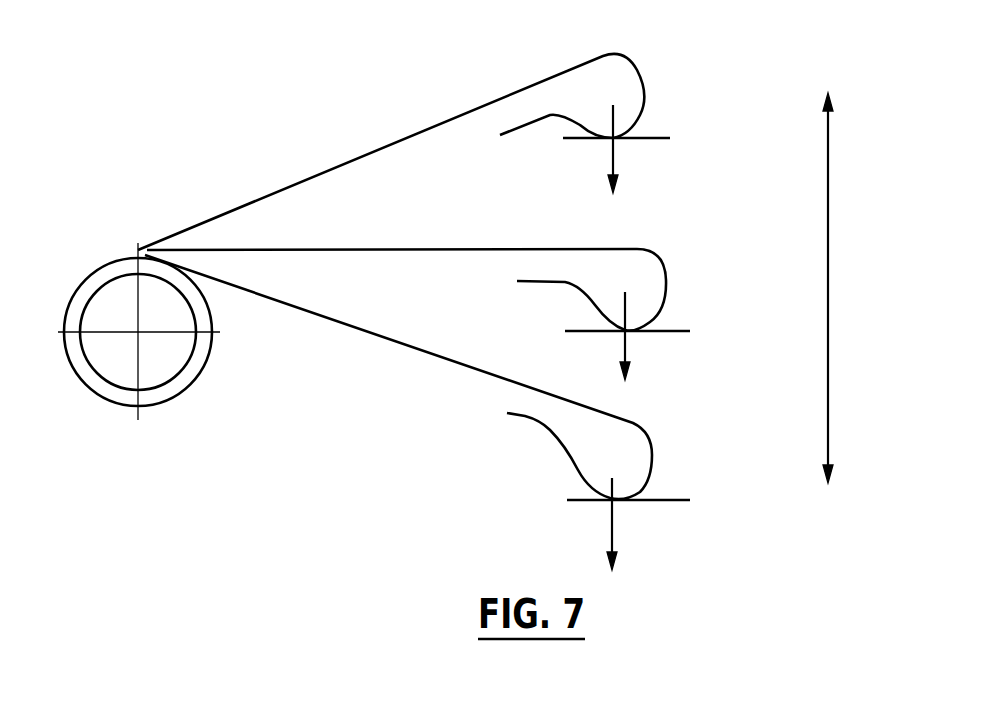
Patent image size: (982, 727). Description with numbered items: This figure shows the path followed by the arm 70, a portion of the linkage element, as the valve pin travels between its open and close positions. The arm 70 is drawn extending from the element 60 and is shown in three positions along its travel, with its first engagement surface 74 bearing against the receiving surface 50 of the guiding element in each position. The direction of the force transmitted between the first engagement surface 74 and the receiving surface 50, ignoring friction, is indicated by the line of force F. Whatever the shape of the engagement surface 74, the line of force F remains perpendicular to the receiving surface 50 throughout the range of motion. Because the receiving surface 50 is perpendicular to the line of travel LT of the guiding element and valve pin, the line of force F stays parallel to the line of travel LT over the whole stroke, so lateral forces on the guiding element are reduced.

The tube 60 is at (98, 288).
The arm 70 is at (513, 92).
The first engagement surface 74 is at (645, 102).
The receiving surface 50 is at (652, 137).
The line of force F is at (617, 157).
The line of travel LT is at (828, 195).